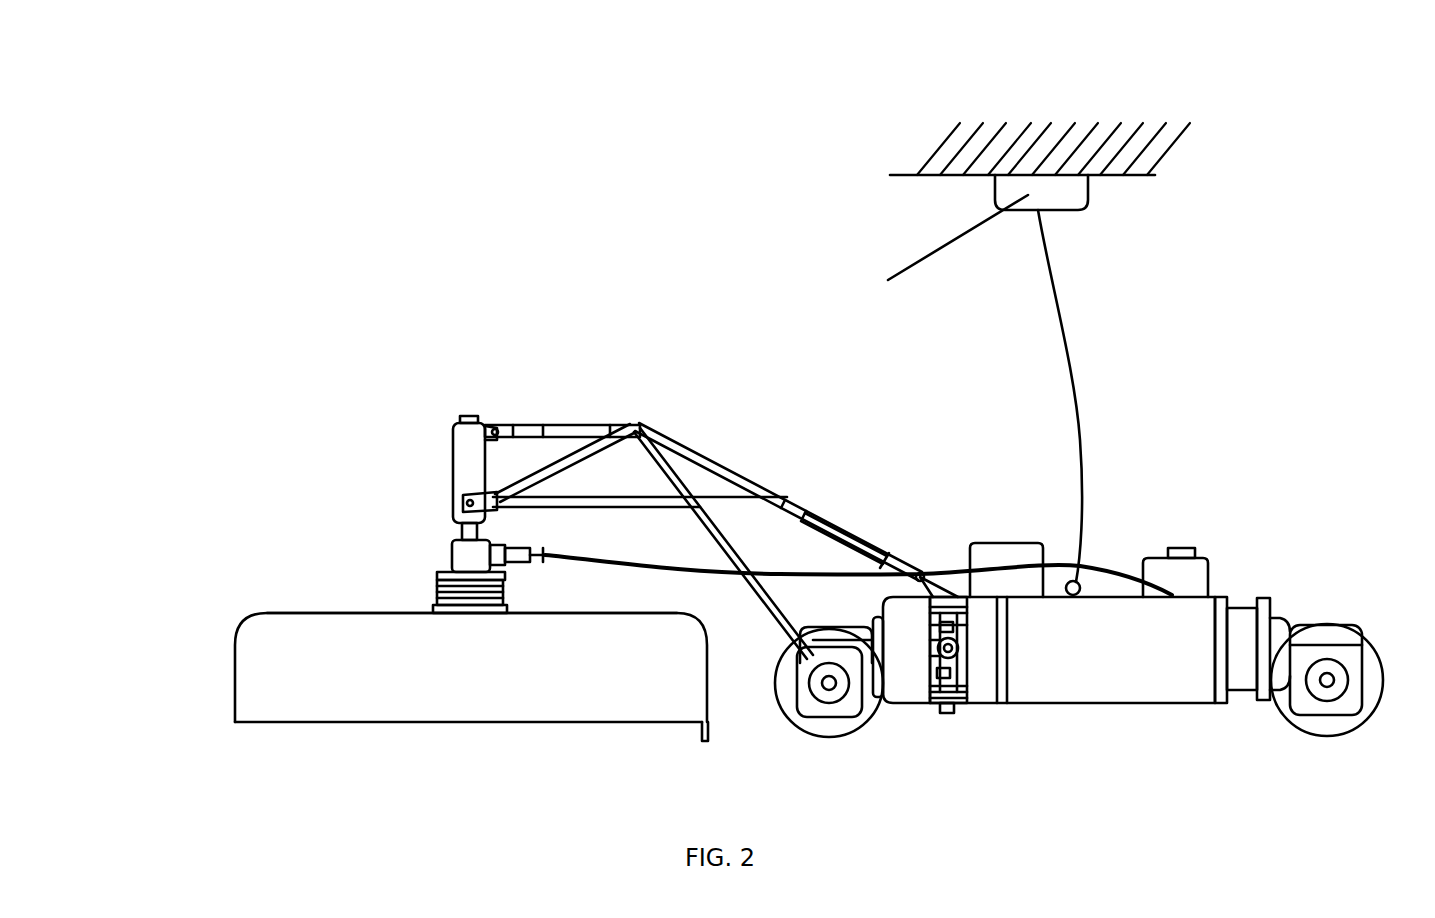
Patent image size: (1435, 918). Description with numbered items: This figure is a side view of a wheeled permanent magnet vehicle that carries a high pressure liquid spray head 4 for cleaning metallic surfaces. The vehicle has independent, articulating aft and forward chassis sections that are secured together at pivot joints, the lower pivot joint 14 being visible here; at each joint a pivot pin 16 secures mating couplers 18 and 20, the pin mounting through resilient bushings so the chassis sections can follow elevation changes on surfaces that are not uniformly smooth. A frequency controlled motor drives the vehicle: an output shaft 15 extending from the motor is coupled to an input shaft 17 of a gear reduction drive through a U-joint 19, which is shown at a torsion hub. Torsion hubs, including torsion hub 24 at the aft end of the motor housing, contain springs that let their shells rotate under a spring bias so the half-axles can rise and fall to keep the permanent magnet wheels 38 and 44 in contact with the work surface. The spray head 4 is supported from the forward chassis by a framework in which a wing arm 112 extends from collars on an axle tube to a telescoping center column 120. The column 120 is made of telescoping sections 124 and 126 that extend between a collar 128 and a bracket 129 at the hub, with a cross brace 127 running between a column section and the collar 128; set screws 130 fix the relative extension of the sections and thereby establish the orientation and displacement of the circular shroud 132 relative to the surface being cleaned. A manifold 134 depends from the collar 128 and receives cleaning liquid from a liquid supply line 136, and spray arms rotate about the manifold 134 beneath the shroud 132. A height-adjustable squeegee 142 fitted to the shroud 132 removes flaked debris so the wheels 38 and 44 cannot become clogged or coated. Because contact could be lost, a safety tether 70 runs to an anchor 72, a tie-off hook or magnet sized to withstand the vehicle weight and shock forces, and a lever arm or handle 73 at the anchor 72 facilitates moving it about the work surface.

The high pressure liquid spray head 4 is at (234, 678).
The lower pivot joint 14 is at (950, 588).
The output shaft 15 is at (970, 648).
The pivot pin 16 is at (941, 585).
The input shaft 17 is at (937, 650).
The mating coupler 18 is at (966, 607).
The U-joint 19 is at (972, 665).
The mating coupler 20 is at (967, 615).
The torsion hub 24 is at (1236, 668).
The permanent magnet wheel 38 is at (822, 737).
The permanent magnet wheel 44 is at (1340, 735).
The safety tether 70 is at (1082, 432).
The anchor 72 is at (1078, 186).
The lever arm or handle 73 is at (945, 246).
The wing arm 112 is at (720, 545).
The telescoping center column 120 is at (686, 442).
The telescoping section 124 is at (820, 523).
The telescoping section 126 is at (525, 428).
The cross brace 127 is at (660, 504).
The collar 128 is at (465, 455).
The bracket 129 is at (912, 588).
The set screw 130 is at (540, 427).
The circular shroud 132 is at (250, 620).
The manifold 134 is at (452, 553).
The liquid supply line 136 is at (643, 572).
The squeegee 142 is at (700, 733).